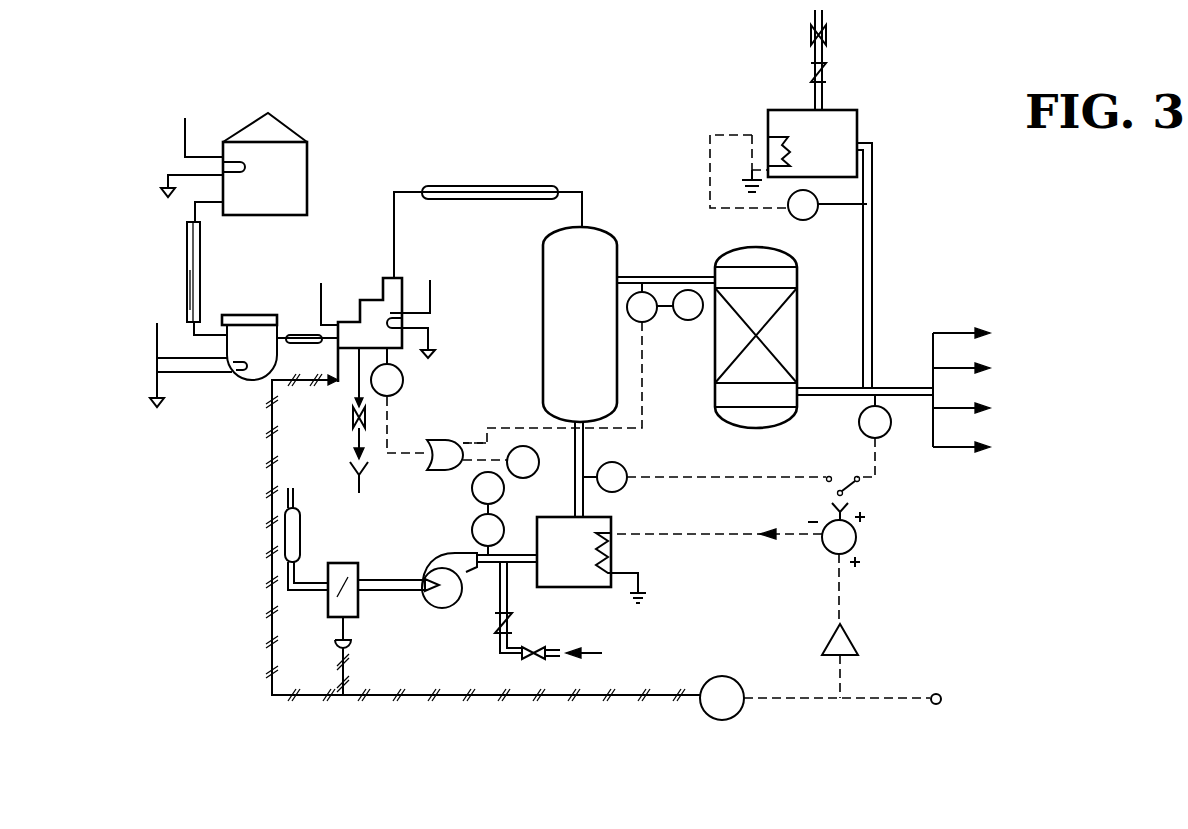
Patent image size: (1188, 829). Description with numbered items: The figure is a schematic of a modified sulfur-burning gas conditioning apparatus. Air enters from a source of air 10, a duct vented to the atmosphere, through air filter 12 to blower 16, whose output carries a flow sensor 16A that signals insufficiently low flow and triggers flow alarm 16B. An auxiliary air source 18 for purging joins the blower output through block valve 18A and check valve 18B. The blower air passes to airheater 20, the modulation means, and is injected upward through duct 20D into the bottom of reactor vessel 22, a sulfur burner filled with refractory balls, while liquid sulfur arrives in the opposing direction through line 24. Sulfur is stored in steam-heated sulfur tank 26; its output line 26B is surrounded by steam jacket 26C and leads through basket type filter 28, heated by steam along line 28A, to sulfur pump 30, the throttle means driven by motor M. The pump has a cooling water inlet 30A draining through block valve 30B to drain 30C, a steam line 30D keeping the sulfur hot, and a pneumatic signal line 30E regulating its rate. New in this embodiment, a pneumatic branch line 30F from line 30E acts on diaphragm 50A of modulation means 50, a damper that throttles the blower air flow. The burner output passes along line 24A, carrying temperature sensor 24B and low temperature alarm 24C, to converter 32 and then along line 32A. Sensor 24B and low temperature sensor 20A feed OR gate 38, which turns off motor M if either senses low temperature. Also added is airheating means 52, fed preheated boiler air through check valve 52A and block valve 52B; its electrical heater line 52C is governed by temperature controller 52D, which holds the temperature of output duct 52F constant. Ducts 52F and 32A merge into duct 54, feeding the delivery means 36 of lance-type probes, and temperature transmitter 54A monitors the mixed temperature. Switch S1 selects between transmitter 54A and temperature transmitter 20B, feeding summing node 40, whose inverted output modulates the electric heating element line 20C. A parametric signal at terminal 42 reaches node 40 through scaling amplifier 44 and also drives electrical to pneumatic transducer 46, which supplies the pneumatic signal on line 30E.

The source of air 10 is at (294, 498).
The air filter 12 is at (300, 530).
The blower 16 is at (424, 560).
The flow sensor 16A is at (472, 530).
The flow alarm 16B is at (472, 489).
The auxiliary air source 18 is at (557, 650).
The block valve 18A is at (534, 659).
The check valve 18B is at (512, 620).
The airheater 20 is at (614, 519).
The low temperature sensor 20A is at (555, 484).
The temperature transmitter 20B is at (621, 465).
The electric heating element line 20C is at (680, 533).
The duct 20D is at (584, 511).
The reactor vessel 22 is at (543, 342).
The sulfur line 24 is at (583, 212).
The line 24A is at (694, 245).
The temperature sensor 24B is at (644, 323).
The low temperature alarm 24C is at (695, 320).
The sulfur tank 26 is at (307, 165).
The output line 26B is at (191, 213).
The steam jacket 26C is at (199, 293).
The basket type filter 28 is at (257, 314).
The steam line 28A is at (155, 343).
The sulfur pump 30 is at (383, 278).
The cooling water inlet 30A is at (321, 300).
The block valve 30B is at (355, 417).
The drain 30C is at (358, 485).
The steam line 30D is at (431, 294).
The pneumatic signal line 30E is at (272, 478).
The pneumatic branch line 30F is at (352, 677).
The converter 32 is at (799, 345).
The line 32A is at (801, 387).
The delivery means 36 is at (957, 333).
The OR gate 38 is at (462, 440).
The summing node 40 is at (857, 545).
The terminal 42 is at (942, 695).
The scaling amplifier 44 is at (853, 645).
The electrical to pneumatic transducer 46 is at (738, 683).
The modulation means 50 is at (356, 616).
The diaphragm 50A is at (338, 646).
The airheating means 52 is at (840, 127).
The check valve 52A is at (828, 72).
The block valve 52B is at (812, 35).
The electrical heater line 52C is at (752, 134).
The temperature controller 52D is at (800, 221).
The output duct 52F is at (874, 201).
The duct 54 is at (903, 388).
The temperature transmitter 54A is at (867, 435).
The switch S1 is at (850, 492).